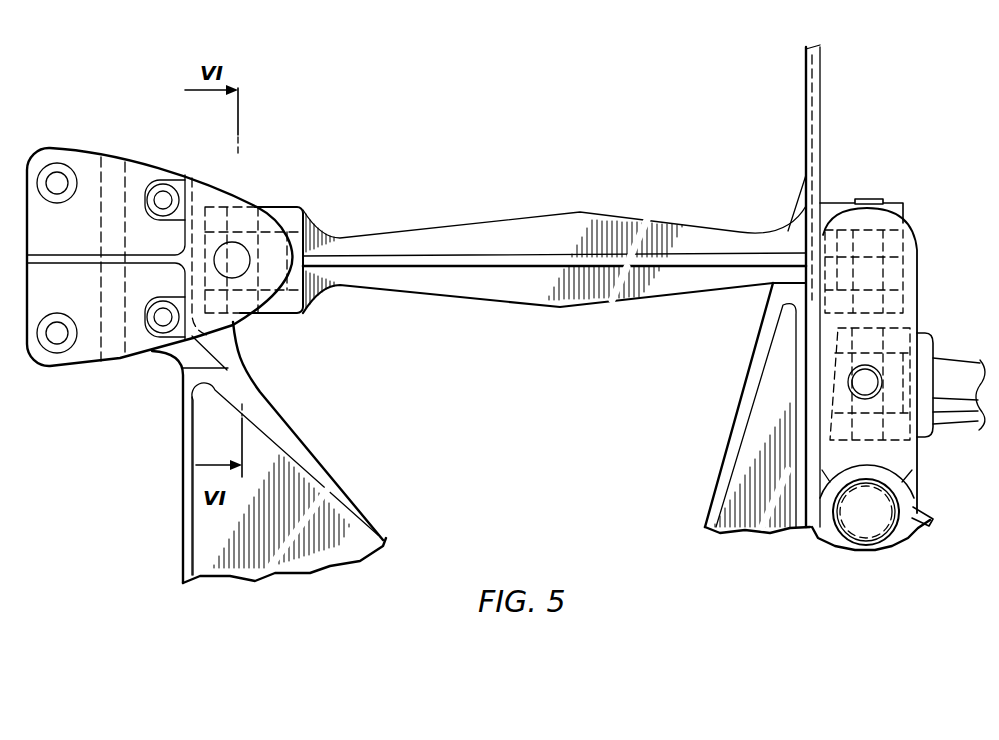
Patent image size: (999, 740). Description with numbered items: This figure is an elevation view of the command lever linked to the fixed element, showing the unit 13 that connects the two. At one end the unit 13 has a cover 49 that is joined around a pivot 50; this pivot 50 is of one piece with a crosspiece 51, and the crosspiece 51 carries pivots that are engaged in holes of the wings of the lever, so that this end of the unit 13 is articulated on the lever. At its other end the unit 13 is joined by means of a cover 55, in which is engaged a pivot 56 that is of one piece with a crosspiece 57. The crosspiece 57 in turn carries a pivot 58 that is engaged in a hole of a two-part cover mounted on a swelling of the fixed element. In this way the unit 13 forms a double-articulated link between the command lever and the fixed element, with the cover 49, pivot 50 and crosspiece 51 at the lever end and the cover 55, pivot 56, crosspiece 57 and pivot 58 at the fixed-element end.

The unit 13 is at (570, 228).
The cover 49 is at (823, 216).
The pivot 50 is at (882, 204).
The crosspiece 51 is at (851, 230).
The cover 55 is at (300, 214).
The pivot 56 is at (255, 207).
The crosspiece 57 is at (267, 246).
The pivot 58 is at (220, 252).